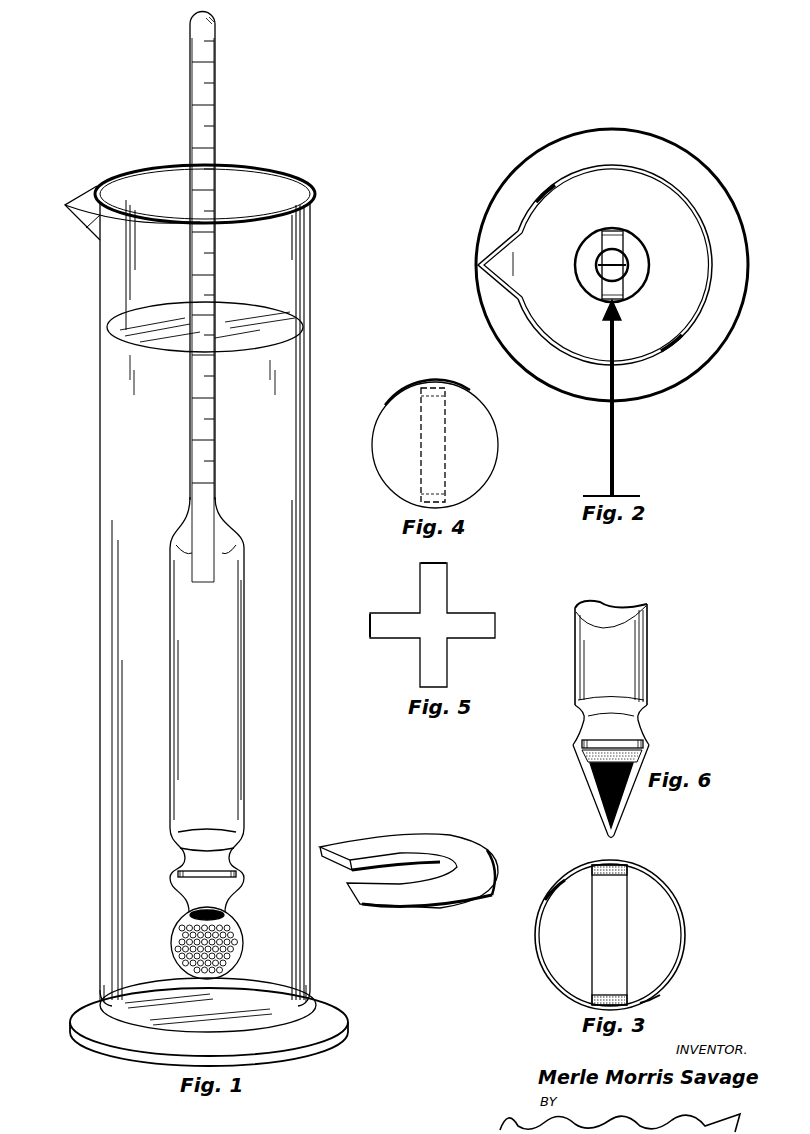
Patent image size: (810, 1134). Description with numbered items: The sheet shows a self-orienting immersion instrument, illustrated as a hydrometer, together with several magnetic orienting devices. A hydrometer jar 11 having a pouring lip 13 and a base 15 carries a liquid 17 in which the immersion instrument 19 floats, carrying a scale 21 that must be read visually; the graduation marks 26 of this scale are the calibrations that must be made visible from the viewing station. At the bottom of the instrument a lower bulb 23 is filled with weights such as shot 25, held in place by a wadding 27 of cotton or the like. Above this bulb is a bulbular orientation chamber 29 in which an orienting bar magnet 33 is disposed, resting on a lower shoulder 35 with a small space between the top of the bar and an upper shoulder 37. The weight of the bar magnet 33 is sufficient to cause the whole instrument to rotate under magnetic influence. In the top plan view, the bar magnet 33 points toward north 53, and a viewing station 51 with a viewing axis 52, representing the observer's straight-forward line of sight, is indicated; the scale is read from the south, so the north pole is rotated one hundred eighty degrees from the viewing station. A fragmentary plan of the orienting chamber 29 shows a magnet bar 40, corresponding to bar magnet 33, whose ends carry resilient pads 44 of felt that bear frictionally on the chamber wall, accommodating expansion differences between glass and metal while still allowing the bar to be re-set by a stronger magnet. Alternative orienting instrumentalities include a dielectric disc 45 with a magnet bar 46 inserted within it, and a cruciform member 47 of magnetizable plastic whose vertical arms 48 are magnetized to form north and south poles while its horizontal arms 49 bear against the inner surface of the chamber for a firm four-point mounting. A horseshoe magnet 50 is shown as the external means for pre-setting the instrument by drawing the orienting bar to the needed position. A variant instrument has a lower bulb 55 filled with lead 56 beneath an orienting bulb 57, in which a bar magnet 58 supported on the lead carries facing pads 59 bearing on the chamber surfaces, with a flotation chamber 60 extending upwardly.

In FIG. 1, the hydrometer jar 11 is at (103, 552).
In FIG. 2, the hydrometer jar 11 is at (702, 215).
In FIG. 1, the pouring lip 13 is at (88, 197).
In FIG. 2, the pouring lip 13 is at (496, 281).
In FIG. 1, the base 15 is at (80, 1002).
In FIG. 2, the base 15 is at (716, 354).
In FIG. 1, the liquid 17 is at (113, 475).
In FIG. 2, the liquid 17 is at (535, 213).
In FIG. 1, the immersion instrument 19 is at (168, 692).
In FIG. 2, the immersion instrument 19 is at (652, 281).
In FIG. 1, the scale 21 is at (193, 75).
In FIG. 2, the scale 21 is at (594, 263).
In FIG. 1, the lower bulb 23 is at (174, 952).
In FIG. 1, the shot 25 is at (178, 967).
In FIG. 1, the graduated scale 26 is at (186, 148).
In FIG. 1, the wadding 27 is at (185, 913).
In FIG. 1, the orientation chamber 29 is at (176, 873).
In FIG. 3, the orientation chamber 29 is at (670, 910).
In FIG. 1, the orienting bar magnet 33 is at (168, 870).
In FIG. 2, the orienting bar magnet 33 is at (622, 290).
In FIG. 1, the lower shoulder 35 is at (178, 892).
In FIG. 1, the upper shoulder 37 is at (173, 860).
In FIG. 3, the magnet bar 40 is at (620, 955).
In FIG. 3, the resilient pads 44 is at (635, 870).
In FIG. 4, the disc 45 is at (396, 399).
In FIG. 4, the magnet bar 46 is at (420, 484).
In FIG. 5, the cruciform member 47 is at (394, 609).
In FIG. 5, the arms 48 is at (420, 578).
In FIG. 5, the arms 49 is at (402, 637).
In FIG. 1, the magnet 50 is at (360, 832).
In FIG. 2, the viewing station 51 is at (628, 495).
In FIG. 2, the viewing axis 52 is at (615, 412).
In FIG. 2, the north 53 is at (620, 52).
In FIG. 6, the lower bulb 55 is at (586, 785).
In FIG. 6, the lead 56 is at (600, 807).
In FIG. 6, the orienting bulb 57 is at (576, 730).
In FIG. 6, the bar magnet 58 is at (644, 742).
In FIG. 6, the facing pads 59 is at (590, 760).
In FIG. 6, the flotation chamber 60 is at (575, 641).